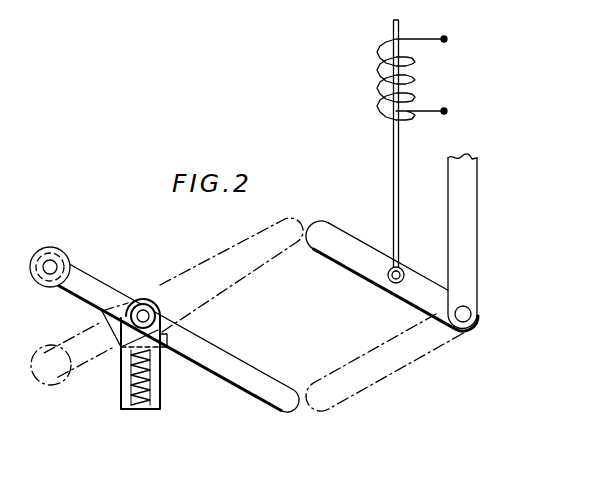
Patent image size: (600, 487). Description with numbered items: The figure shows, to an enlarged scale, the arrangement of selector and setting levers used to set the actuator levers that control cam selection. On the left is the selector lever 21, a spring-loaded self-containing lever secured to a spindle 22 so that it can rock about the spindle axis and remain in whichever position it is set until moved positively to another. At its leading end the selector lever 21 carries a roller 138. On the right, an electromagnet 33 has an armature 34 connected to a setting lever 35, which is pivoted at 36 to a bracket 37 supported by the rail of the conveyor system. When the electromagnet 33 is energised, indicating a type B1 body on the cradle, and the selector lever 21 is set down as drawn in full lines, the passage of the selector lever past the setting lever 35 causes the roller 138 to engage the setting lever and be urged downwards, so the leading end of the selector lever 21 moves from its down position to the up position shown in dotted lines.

The roller 138 is at (65, 252).
The selector lever 21 is at (88, 285).
The spindle 22 is at (147, 310).
The electromagnet 33 is at (403, 75).
The armature 34 is at (400, 173).
The setting lever 35 is at (353, 245).
The pivot 36 is at (471, 314).
The bracket 37 is at (468, 245).